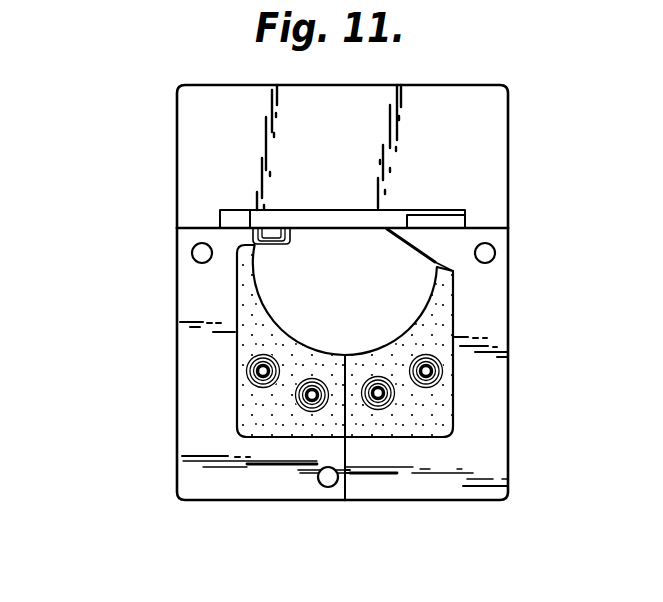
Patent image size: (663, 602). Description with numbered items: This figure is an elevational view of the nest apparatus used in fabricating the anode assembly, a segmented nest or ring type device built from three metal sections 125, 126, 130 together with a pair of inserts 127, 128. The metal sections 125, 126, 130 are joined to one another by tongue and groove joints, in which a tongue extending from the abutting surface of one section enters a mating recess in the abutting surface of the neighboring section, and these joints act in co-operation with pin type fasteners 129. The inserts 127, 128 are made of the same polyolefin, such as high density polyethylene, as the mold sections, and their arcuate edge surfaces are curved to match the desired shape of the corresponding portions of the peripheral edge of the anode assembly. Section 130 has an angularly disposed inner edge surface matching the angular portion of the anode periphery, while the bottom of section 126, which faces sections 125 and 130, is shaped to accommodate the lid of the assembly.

The metal section 125 is at (188, 388).
The metal section 126 is at (188, 132).
The insert 127 is at (283, 425).
The insert 128 is at (402, 427).
The pin type fasteners 129 is at (192, 253).
The metal section 130 is at (498, 395).